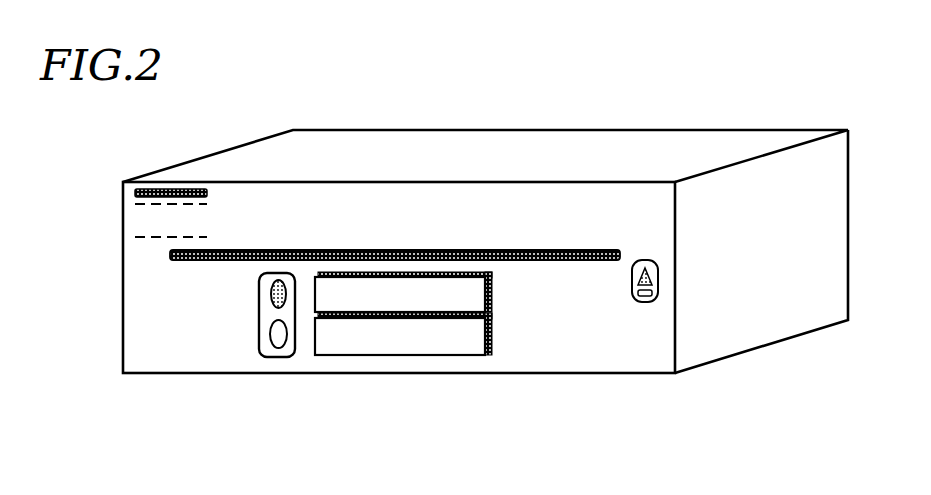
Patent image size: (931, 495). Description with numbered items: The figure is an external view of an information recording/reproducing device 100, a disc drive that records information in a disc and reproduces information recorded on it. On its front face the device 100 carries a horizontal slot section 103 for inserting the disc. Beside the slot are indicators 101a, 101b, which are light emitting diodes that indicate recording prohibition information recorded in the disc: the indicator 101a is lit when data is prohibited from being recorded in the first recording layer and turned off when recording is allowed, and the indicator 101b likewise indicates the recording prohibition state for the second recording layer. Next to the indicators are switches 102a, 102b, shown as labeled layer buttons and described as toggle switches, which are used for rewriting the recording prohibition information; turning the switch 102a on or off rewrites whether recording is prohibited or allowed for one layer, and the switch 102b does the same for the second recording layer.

The information recording/reproducing device 100 is at (715, 130).
The indicator 101a is at (272, 294).
The indicator 101b is at (277, 343).
The switch 102a is at (472, 291).
The switch 102b is at (465, 348).
The slot section 103 is at (538, 250).